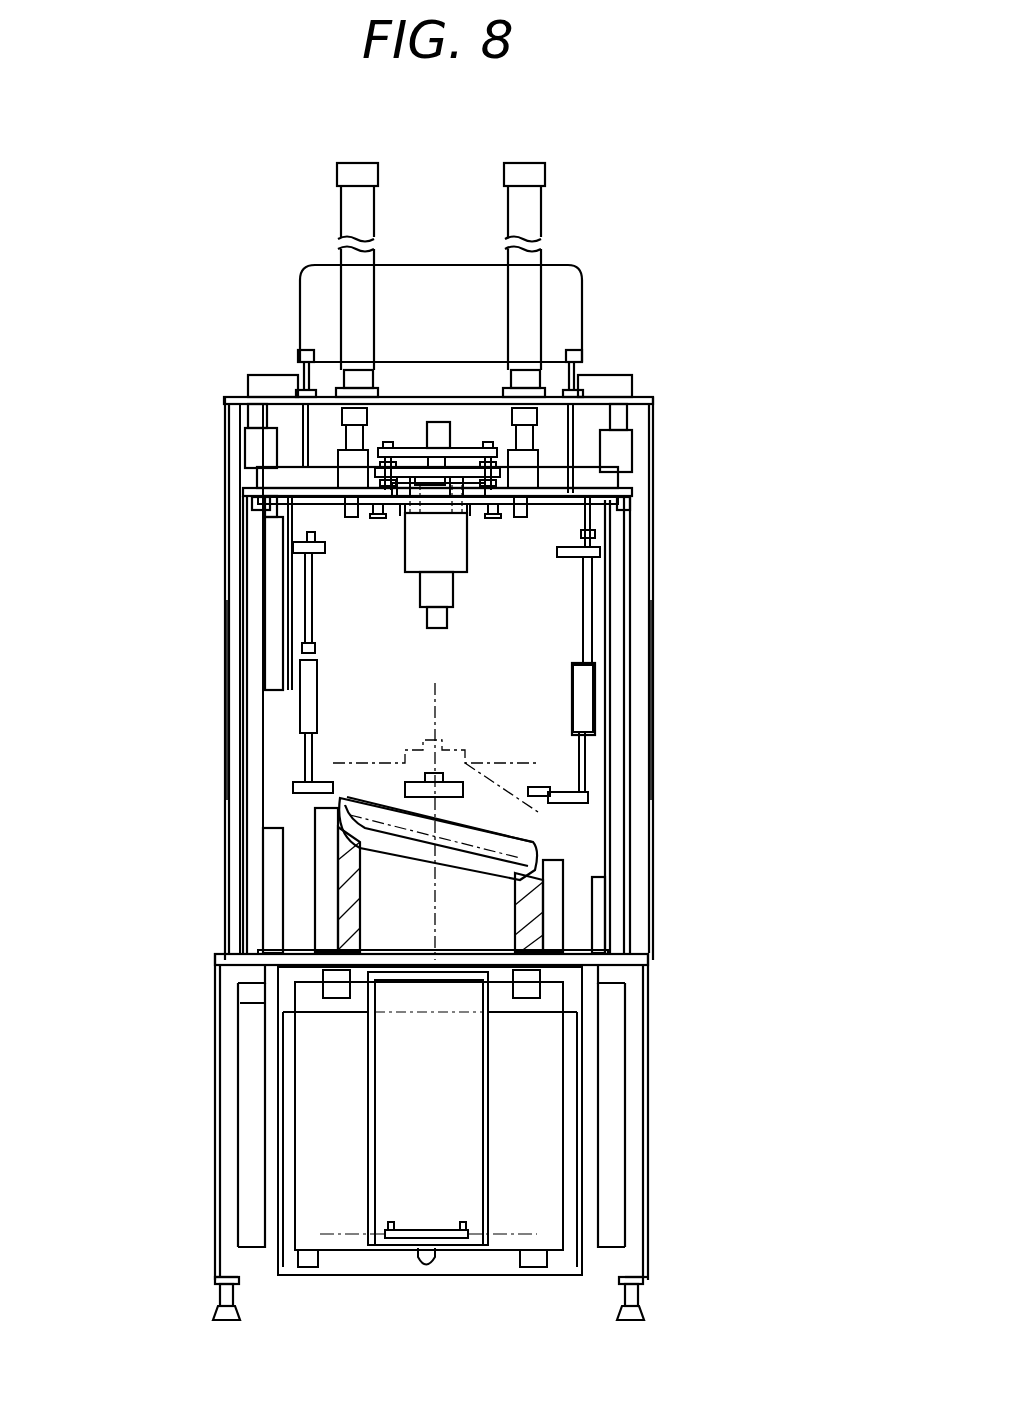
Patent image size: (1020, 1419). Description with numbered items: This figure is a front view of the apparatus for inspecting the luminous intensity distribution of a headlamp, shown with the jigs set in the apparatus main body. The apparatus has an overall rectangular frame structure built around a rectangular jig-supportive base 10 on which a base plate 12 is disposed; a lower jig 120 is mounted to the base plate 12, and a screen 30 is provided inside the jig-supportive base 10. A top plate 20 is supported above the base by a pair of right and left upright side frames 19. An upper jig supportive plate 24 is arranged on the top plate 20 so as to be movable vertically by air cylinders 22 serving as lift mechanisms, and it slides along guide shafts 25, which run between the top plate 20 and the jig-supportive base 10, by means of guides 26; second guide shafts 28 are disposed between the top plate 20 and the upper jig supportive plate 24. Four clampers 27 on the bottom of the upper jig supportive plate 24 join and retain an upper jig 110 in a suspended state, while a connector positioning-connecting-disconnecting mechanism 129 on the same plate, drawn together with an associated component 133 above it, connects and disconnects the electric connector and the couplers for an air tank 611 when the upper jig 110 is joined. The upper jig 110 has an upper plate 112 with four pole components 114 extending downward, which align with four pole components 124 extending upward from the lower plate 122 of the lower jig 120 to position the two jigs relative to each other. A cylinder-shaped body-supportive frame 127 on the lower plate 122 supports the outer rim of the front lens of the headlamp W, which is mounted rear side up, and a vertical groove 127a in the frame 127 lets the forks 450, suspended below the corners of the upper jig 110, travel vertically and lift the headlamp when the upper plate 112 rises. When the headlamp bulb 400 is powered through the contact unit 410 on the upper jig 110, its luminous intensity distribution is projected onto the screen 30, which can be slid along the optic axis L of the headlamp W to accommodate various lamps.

The jig-supportive base 10 is at (205, 1026).
The base plate 12 is at (245, 965).
The upright side frames 19 is at (222, 710).
The top plate 20 is at (602, 398).
The air cylinders 22 is at (352, 293).
The upper jig supportive plate 24 is at (270, 472).
The guide shafts 25 is at (245, 505).
The guides 26 is at (252, 432).
The clampers 27 is at (352, 522).
The second guide shafts 28 is at (302, 445).
The screen 30 is at (452, 1242).
The upper jig 110 is at (268, 580).
The upper plate 112 is at (630, 510).
The pole components 114 is at (278, 636).
The lower jig 120 is at (258, 840).
The lower plate 122 is at (620, 952).
The pole components 124 is at (273, 928).
The body-supportive frame 127 is at (332, 862).
The vertical groove 127a is at (325, 908).
The connector positioning-connecting-disconnecting mechanism 129 is at (458, 441).
The motor block 133 is at (441, 420).
The headlamp bulb 400 is at (480, 795).
The contact unit 410 is at (460, 614).
The forks 450 is at (308, 740).
The air tank 611 is at (436, 265).
The headlamp W is at (510, 813).
The optic axis L is at (650, 985).